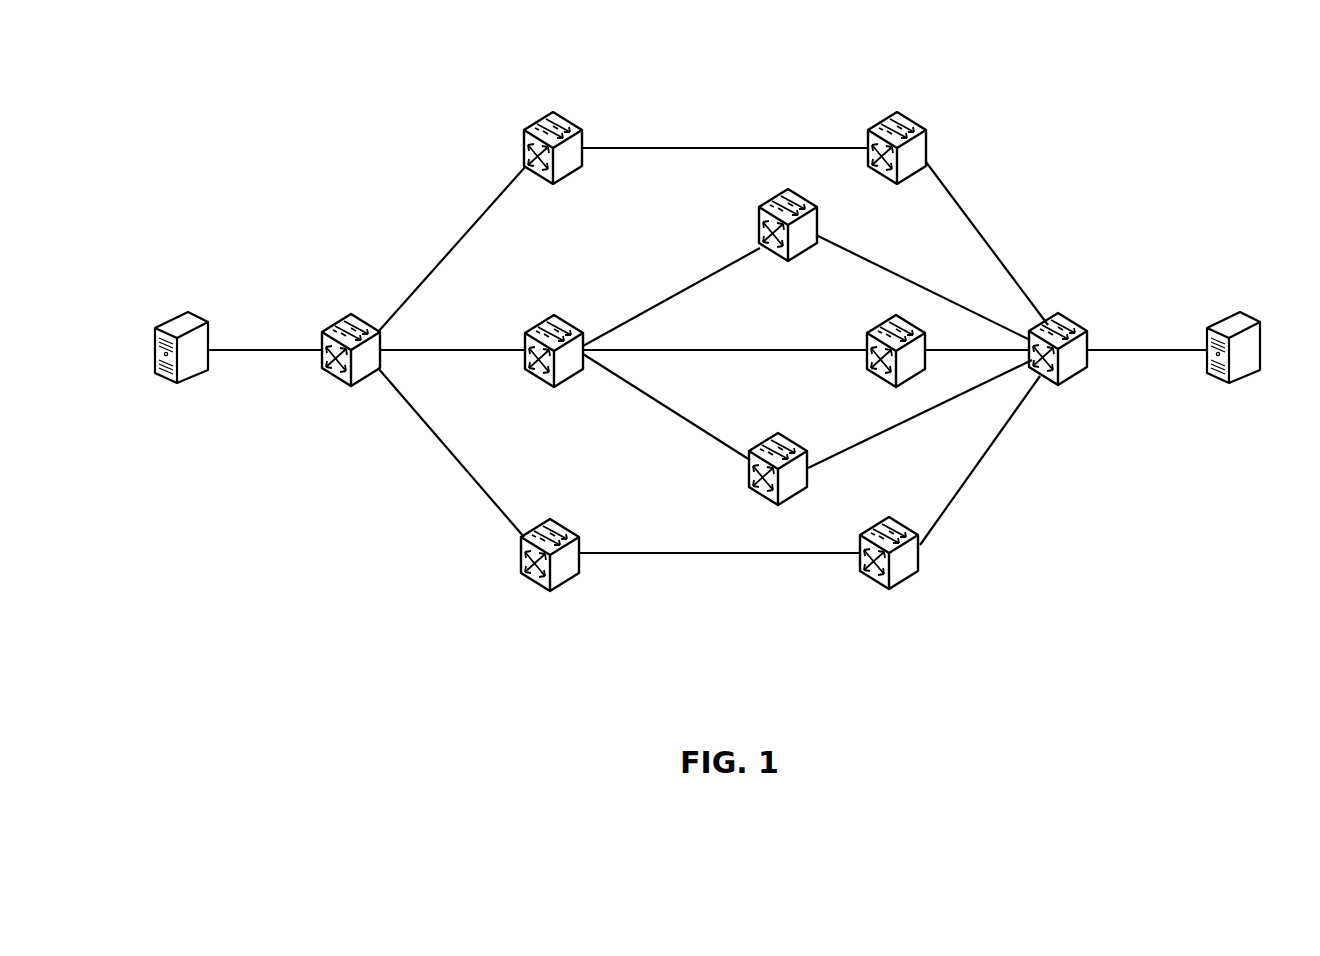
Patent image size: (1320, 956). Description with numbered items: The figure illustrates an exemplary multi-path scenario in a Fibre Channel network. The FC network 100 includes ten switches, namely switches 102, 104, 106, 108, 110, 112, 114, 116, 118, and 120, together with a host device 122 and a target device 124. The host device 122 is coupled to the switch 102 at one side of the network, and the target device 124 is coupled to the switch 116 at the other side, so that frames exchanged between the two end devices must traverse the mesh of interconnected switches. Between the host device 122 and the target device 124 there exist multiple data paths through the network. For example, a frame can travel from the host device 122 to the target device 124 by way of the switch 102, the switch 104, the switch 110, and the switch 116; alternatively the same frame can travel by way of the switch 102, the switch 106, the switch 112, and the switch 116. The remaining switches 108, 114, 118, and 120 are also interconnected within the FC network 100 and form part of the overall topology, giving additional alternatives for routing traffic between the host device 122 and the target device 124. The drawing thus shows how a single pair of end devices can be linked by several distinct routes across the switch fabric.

The FC network 100 is at (725, 697).
The switch 102 is at (332, 332).
The switch 104 is at (555, 113).
The switch 106 is at (530, 330).
The switch 108 is at (567, 532).
The switch 110 is at (922, 133).
The switch 112 is at (883, 323).
The switch 114 is at (875, 582).
The switch 116 is at (1072, 318).
The switch 118 is at (802, 196).
The switch 120 is at (790, 438).
The host device 122 is at (173, 313).
The target device 124 is at (1240, 312).